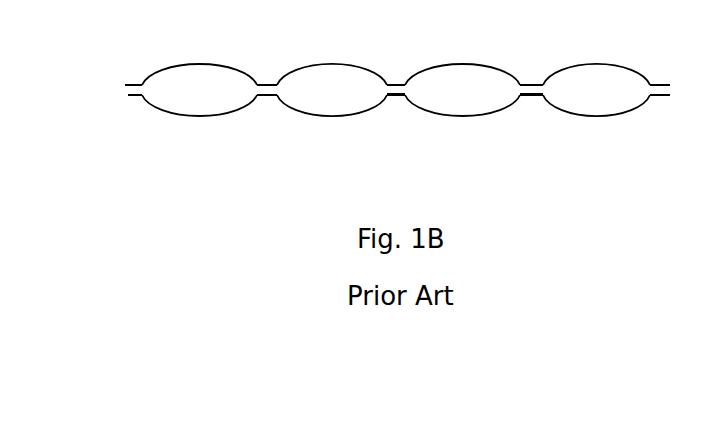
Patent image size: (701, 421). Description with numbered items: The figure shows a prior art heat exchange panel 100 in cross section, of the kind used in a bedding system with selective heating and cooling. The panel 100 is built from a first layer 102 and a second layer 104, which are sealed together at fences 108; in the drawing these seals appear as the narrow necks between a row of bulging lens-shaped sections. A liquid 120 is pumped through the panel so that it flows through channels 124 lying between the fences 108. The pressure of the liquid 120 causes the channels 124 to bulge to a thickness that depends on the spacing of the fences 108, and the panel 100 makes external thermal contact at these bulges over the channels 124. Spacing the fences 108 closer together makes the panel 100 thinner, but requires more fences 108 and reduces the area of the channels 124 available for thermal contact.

The heat exchange panel 100 is at (68, 240).
The first layer 102 is at (615, 63).
The second layer 104 is at (613, 118).
The fences 108 is at (395, 100).
The liquid 120 is at (585, 82).
The channels 124 is at (447, 82).